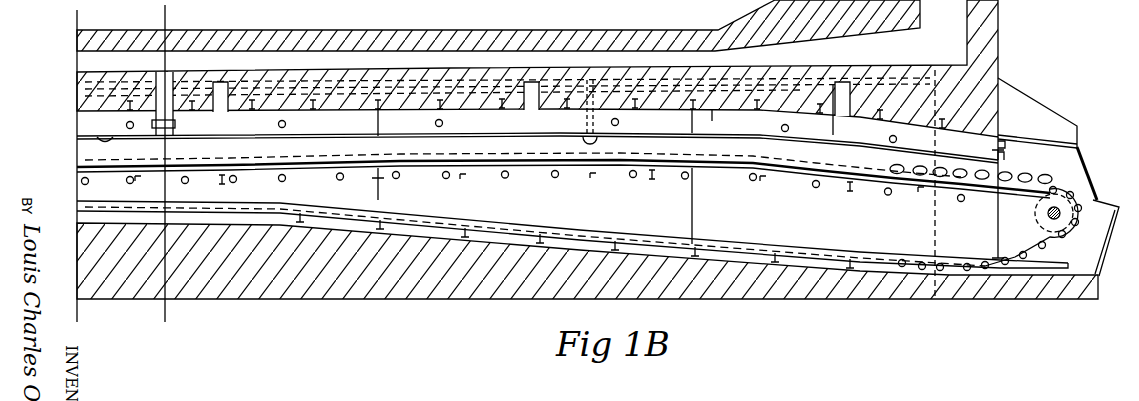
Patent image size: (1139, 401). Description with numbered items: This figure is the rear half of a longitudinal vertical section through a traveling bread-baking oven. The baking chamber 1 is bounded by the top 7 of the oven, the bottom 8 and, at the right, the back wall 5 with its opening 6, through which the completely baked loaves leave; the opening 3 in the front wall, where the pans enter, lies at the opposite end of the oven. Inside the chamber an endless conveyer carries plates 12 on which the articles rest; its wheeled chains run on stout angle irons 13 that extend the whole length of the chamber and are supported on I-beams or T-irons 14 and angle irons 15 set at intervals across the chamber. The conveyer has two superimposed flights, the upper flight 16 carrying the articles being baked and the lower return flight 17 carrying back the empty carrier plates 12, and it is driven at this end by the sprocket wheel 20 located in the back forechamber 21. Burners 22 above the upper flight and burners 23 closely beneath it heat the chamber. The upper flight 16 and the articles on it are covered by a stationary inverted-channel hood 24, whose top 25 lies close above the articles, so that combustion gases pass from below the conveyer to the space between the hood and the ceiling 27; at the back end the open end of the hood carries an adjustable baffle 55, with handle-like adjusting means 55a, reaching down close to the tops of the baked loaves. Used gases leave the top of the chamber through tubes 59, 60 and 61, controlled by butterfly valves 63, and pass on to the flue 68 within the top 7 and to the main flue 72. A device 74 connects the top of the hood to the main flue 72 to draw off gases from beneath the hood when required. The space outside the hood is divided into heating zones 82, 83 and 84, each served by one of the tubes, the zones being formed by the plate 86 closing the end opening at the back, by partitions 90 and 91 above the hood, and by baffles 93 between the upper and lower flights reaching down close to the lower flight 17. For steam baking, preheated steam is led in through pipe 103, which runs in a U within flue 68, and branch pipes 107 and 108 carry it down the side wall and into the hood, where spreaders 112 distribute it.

The baking chamber 1 is at (563, 167).
The opening 3 is at (182, 313).
The back wall 5 is at (985, 100).
The opening 6 is at (1005, 153).
The top 7 is at (373, 32).
The bottom 8 is at (432, 299).
The plates 12 is at (1048, 247).
The angle irons 13 is at (242, 216).
The I-beams or T-irons 14 is at (543, 182).
The angle irons 15 is at (612, 168).
The upper conveyer flight 16 is at (247, 163).
The lower conveyer flight 17 is at (836, 250).
The sprocket wheel 20 is at (1037, 222).
The forechamber 21 is at (1085, 255).
The burners 22 is at (782, 128).
The burners 23 is at (818, 188).
The hood 24 is at (537, 148).
The top of hood 25 is at (799, 141).
The ceiling 27 is at (724, 119).
The baffle 55 is at (1003, 167).
The handle-like means 55a is at (1073, 127).
The tube 59 is at (234, 105).
The tube 60 is at (510, 104).
The tube 61 is at (832, 108).
The butterfly valves 63 is at (842, 100).
The flue 68 is at (917, 88).
The main flue 72 is at (537, 68).
The outlet device 74 is at (177, 114).
The heating zone 82 is at (213, 156).
The heating zone 83 is at (541, 162).
The heating zone 84 is at (857, 173).
The plate 86 is at (1007, 140).
The partition 90 is at (382, 118).
The partition 91 is at (693, 120).
The baffles 93 is at (995, 217).
The steam pipe 103 is at (85, 90).
The branch pipe 107 is at (95, 128).
The branch pipe 108 is at (588, 119).
The spreader 112 is at (578, 135).